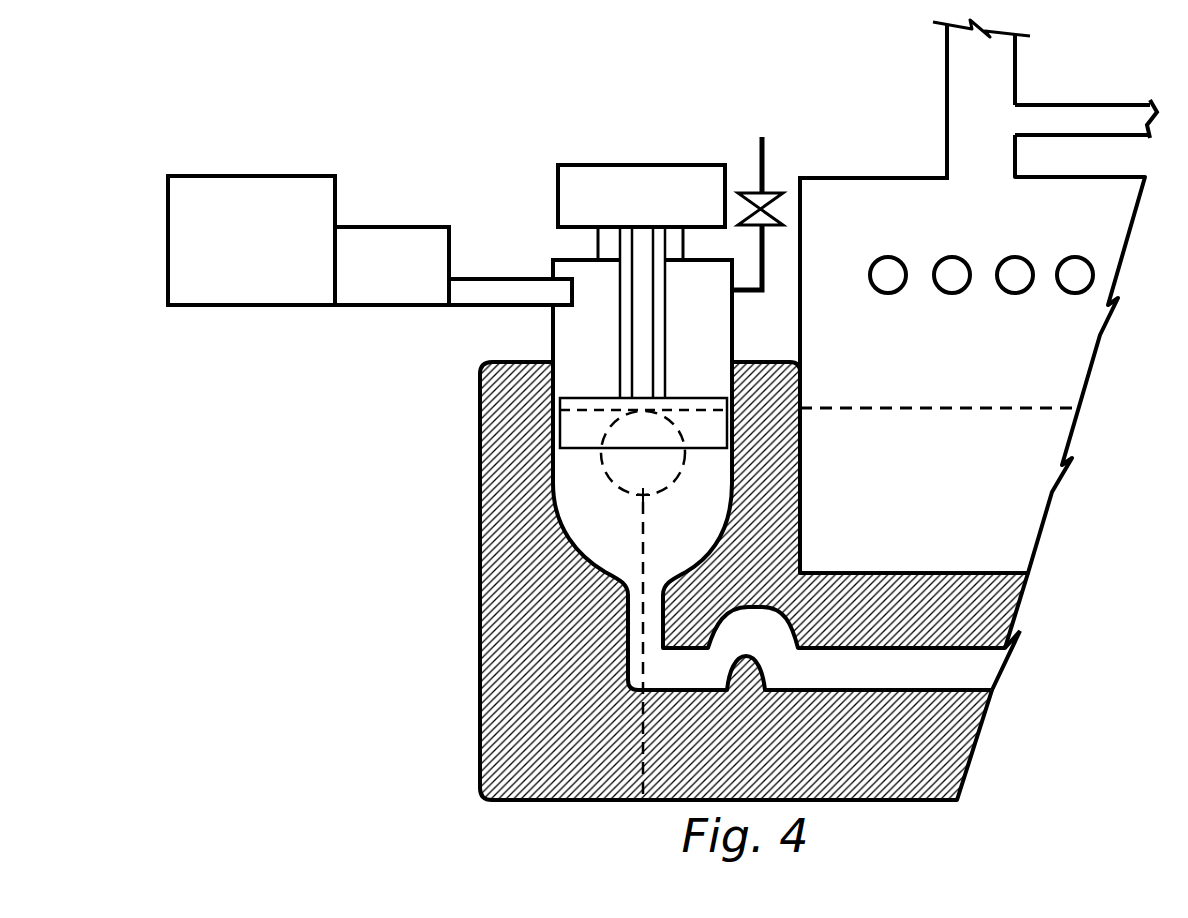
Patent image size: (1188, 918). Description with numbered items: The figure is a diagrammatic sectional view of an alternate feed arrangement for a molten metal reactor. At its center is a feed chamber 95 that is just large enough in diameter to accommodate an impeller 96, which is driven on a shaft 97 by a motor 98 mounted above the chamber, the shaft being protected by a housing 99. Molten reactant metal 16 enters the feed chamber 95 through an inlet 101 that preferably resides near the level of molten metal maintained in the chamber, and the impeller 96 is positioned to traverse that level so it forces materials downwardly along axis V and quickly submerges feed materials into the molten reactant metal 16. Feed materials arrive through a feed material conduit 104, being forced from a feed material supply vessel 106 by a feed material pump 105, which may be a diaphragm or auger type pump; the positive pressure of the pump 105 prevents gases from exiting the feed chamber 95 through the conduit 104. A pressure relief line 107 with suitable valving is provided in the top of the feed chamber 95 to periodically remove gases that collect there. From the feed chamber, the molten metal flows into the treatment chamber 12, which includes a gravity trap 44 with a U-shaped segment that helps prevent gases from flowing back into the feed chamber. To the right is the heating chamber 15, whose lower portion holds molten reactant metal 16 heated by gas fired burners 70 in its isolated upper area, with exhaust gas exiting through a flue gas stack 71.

The feed material supply vessel 106 is at (278, 176).
The feed material pump 105 is at (420, 227).
The feed material conduit 104 is at (525, 279).
The motor 98 is at (666, 165).
The feed chamber 95 is at (553, 352).
The housing 99 is at (665, 318).
The shaft 97 is at (653, 360).
The impeller 96 is at (612, 398).
The inlet 101 is at (660, 495).
The axis V is at (643, 560).
The pressure relief line 107 is at (762, 160).
The gravity trap 44 is at (670, 683).
The treatment chamber 12 is at (812, 683).
The heating chamber 15 is at (1048, 175).
The flue gas stack 71 is at (1015, 57).
The gas fired burners 70 is at (873, 260).
The molten reactant metal 16 is at (579, 513).